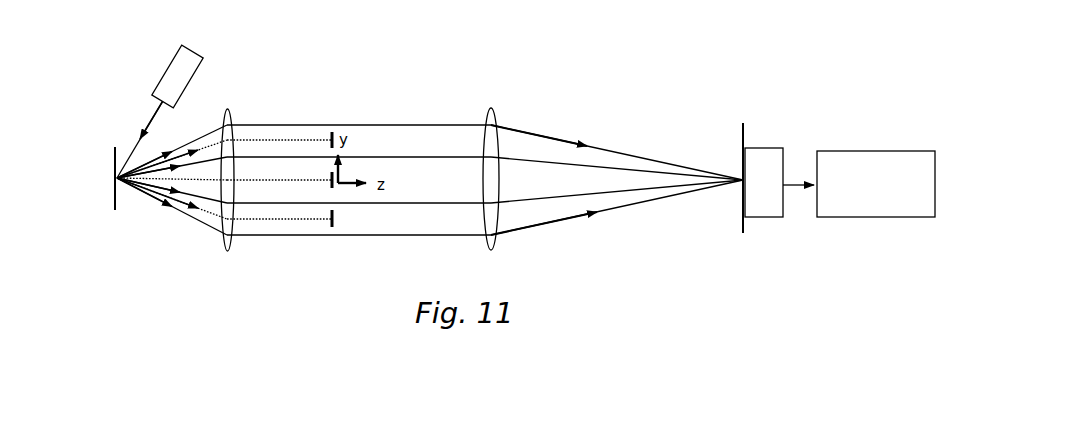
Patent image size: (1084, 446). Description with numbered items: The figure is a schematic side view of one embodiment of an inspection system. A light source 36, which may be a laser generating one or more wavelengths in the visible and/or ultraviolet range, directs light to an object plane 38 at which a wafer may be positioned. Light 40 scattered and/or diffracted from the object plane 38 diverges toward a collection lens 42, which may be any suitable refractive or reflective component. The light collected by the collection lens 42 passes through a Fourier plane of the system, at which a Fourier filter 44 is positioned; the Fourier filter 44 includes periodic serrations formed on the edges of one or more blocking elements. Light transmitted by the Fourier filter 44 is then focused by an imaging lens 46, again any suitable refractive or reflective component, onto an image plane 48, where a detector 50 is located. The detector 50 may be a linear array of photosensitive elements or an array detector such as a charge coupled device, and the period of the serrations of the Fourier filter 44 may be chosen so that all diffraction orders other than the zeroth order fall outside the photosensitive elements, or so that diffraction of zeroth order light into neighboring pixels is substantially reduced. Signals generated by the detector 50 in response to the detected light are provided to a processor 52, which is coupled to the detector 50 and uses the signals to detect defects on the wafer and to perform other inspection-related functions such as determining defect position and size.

The light source 36 is at (193, 52).
The object plane 38 is at (113, 165).
The light 40 is at (190, 214).
The collection lens 42 is at (228, 110).
The Fourier filter 44 is at (335, 130).
The imaging lens 46 is at (493, 117).
The image plane 48 is at (745, 128).
The detector 50 is at (768, 148).
The processor 52 is at (876, 184).